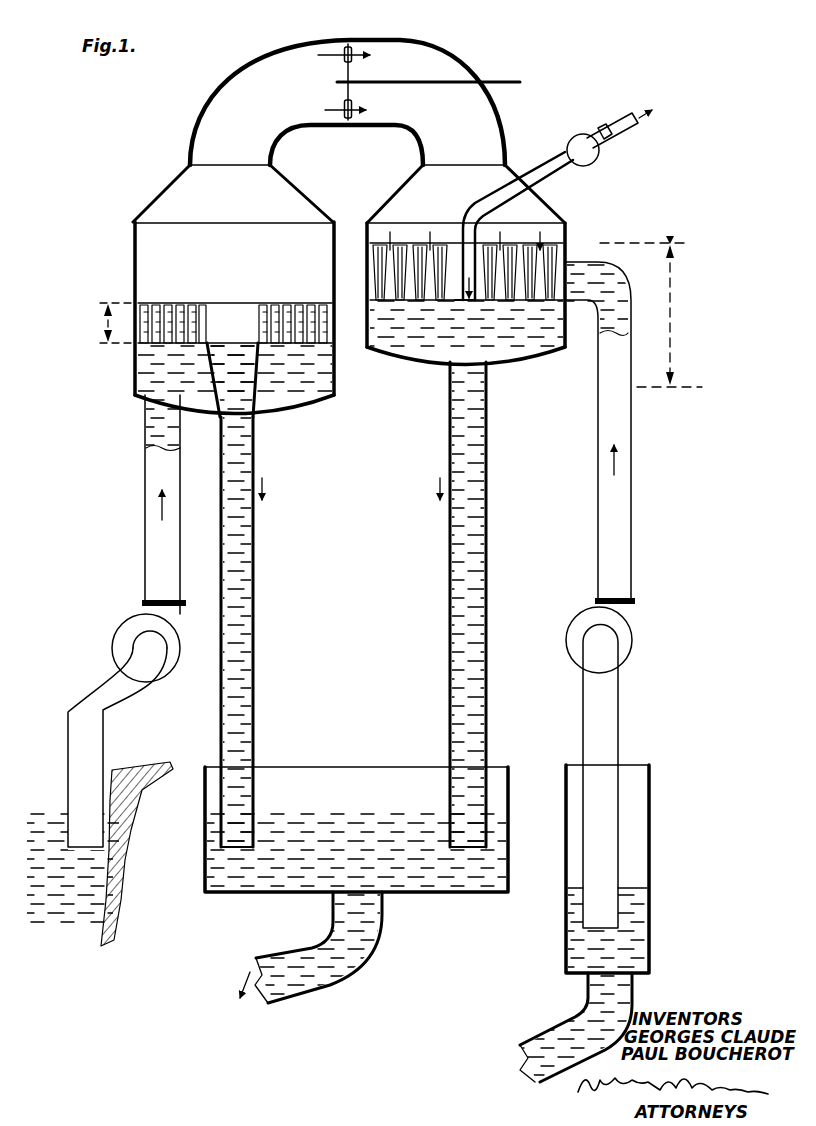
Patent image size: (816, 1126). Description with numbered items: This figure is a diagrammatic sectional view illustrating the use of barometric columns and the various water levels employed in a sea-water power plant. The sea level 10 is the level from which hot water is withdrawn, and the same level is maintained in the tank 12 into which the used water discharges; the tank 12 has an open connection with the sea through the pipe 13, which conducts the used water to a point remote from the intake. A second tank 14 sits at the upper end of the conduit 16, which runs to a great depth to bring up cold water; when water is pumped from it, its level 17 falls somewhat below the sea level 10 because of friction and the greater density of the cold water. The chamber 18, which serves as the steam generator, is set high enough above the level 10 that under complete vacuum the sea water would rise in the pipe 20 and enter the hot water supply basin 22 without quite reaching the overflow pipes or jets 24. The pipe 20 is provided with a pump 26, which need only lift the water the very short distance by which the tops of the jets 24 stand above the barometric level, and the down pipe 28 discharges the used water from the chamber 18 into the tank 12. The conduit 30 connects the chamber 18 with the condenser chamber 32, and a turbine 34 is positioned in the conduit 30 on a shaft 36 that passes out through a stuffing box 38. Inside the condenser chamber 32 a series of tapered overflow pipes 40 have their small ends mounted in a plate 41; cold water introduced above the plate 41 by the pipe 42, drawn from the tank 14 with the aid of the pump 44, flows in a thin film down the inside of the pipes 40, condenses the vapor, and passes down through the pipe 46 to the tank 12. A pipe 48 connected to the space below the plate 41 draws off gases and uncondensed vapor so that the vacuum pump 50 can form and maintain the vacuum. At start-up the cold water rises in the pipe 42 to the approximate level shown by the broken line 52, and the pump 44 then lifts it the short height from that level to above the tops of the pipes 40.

The sea level 10 is at (357, 805).
The tank 12 is at (508, 770).
The pipe 13 is at (312, 997).
The tank 14 is at (651, 786).
The conduit 16 is at (545, 1025).
The water level 17 is at (622, 886).
The chamber 18 is at (134, 251).
The pipe 20 is at (88, 683).
The hot water supply basin 22 is at (312, 389).
The overflow pipes or jets 24 is at (207, 303).
The pump 26 is at (135, 620).
The down pipe 28 is at (256, 609).
The conduit 30 is at (305, 40).
The condenser chamber 32 is at (503, 122).
The turbine 34 is at (352, 46).
The shaft 36 is at (424, 81).
The stuffing box 38 is at (484, 79).
The overflow pipes 40 is at (425, 245).
The plate 41 is at (437, 302).
The pipe 42 is at (612, 275).
The pump 44 is at (622, 633).
The pipe 46 is at (488, 508).
The pipe 48 is at (503, 194).
The vacuum pump 50 is at (592, 160).
The broken line 52 is at (661, 319).